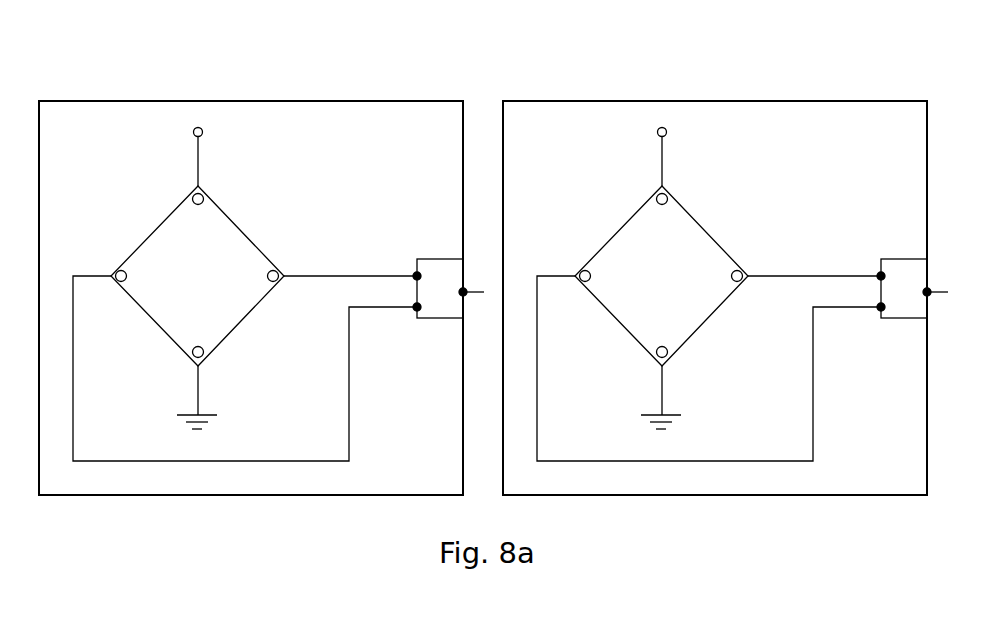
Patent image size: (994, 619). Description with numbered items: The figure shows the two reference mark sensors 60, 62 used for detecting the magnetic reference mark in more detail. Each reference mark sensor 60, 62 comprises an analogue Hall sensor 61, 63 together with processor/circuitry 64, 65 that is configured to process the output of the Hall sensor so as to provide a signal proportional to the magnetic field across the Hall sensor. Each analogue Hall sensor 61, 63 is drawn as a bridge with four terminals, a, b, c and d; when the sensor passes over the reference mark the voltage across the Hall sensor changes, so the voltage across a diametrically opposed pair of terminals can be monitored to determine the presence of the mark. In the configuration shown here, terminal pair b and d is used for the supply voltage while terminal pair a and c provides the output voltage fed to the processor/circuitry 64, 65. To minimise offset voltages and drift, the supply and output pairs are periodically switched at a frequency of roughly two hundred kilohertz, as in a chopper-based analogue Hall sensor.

The reference mark sensor 60 is at (87, 101).
The analogue Hall sensor 61 is at (213, 287).
The reference mark sensor 62 is at (800, 101).
The analogue Hall sensor 63 is at (677, 287).
The processor/circuitry 64 is at (438, 259).
The processor/circuitry 65 is at (903, 259).